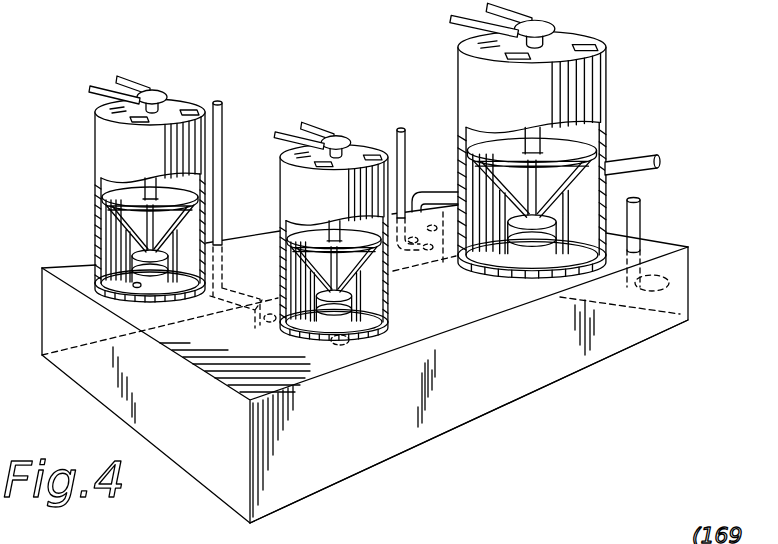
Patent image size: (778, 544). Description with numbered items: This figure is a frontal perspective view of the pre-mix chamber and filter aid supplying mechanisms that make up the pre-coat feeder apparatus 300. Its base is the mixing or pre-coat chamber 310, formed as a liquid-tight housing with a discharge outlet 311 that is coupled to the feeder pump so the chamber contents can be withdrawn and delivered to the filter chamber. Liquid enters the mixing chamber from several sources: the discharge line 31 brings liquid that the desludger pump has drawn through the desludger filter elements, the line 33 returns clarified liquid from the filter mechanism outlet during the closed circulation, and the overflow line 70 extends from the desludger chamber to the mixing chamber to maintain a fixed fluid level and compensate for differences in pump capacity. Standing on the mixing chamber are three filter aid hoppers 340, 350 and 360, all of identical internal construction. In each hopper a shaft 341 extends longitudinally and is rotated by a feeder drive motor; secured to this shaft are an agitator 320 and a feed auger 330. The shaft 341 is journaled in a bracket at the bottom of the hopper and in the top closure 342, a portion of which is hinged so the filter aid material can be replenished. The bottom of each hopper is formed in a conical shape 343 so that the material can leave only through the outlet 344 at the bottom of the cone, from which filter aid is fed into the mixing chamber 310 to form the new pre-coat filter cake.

The pre-coat feeder apparatus 300 is at (522, 399).
The pre-coat mixing chamber 310 is at (414, 445).
The discharge outlet 311 is at (657, 253).
The discharge line 31 is at (227, 103).
The line 33 is at (437, 103).
The overflow line 70 is at (637, 155).
The agitator 320 is at (124, 198).
The feed auger 330 is at (137, 265).
The filter aid hopper 340 is at (612, 63).
The shaft 341 is at (135, 178).
The top closure 342 is at (180, 93).
The conical shape 343 is at (116, 226).
The outlet 344 is at (133, 284).
The filter aid hopper 350 is at (283, 105).
The filter aid hopper 360 is at (90, 133).